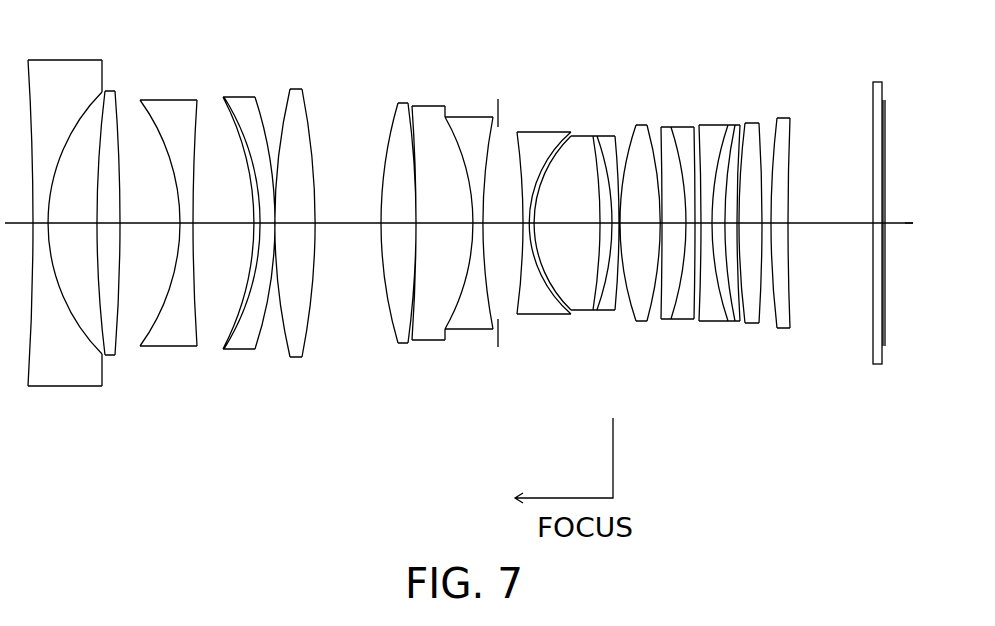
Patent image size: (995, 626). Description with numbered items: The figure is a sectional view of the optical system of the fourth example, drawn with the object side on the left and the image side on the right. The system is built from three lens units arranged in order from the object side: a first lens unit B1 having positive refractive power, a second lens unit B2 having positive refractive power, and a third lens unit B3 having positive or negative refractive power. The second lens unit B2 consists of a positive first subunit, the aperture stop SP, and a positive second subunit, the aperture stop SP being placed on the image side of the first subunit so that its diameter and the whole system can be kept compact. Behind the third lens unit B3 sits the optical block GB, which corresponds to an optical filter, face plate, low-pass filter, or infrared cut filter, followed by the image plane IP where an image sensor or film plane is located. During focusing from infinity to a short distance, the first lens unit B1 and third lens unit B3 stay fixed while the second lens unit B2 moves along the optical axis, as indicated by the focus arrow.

The first lens unit B1 is at (41, 52).
The second lens unit B2 is at (390, 52).
The third lens unit B3 is at (771, 52).
The aperture stop SP is at (502, 258).
The optical block GB is at (873, 52).
The image plane IP is at (909, 211).